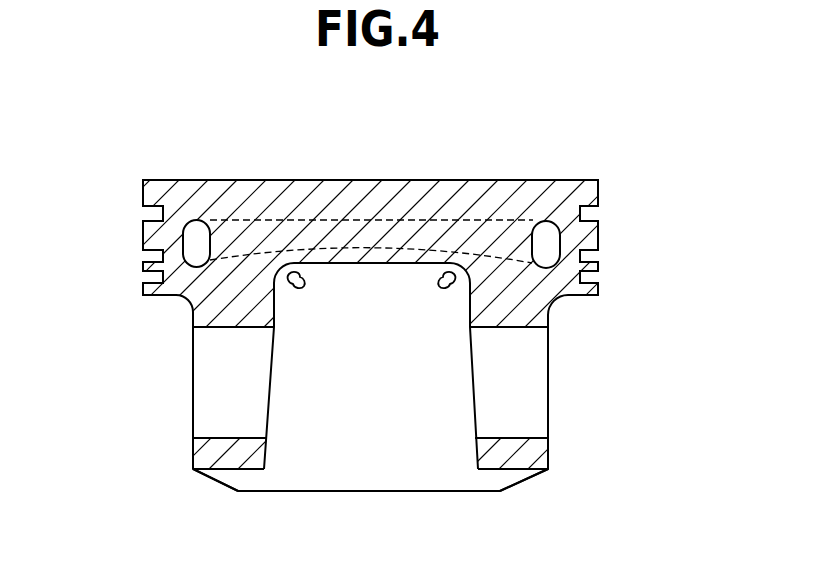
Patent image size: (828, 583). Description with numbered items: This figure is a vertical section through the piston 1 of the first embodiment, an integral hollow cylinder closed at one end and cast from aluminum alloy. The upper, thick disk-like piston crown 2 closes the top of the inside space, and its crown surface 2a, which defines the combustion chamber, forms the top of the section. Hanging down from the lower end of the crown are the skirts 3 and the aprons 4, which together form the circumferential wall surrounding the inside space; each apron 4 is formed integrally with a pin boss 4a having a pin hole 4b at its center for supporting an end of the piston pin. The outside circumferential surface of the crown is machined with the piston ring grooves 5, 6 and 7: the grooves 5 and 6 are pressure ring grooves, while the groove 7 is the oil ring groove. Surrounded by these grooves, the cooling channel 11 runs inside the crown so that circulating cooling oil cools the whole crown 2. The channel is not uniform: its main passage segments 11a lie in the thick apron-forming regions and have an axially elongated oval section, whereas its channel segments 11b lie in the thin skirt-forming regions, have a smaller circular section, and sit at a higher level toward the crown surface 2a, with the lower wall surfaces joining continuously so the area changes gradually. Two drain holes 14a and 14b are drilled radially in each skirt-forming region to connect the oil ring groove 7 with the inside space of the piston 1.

The piston 1 is at (618, 190).
The piston crown 2 is at (498, 198).
The crown surface 2a is at (424, 181).
The skirt 3 is at (375, 476).
The apron 4 is at (548, 388).
The pin boss 4a is at (516, 461).
The pin hole 4b is at (518, 440).
The piston ring groove 5 is at (592, 215).
The piston ring groove 6 is at (592, 256).
The piston ring groove 7 is at (592, 277).
The cooling channel 11 is at (338, 216).
The main passage segment 11a is at (195, 222).
The channel segment 11b is at (293, 228).
The drain hole 14a is at (291, 284).
The drain hole 14b is at (453, 283).